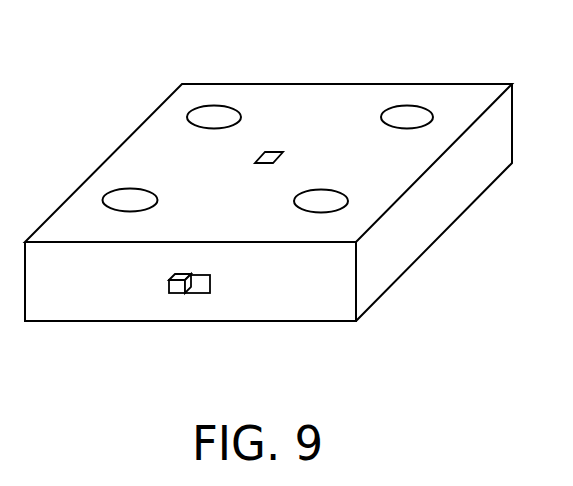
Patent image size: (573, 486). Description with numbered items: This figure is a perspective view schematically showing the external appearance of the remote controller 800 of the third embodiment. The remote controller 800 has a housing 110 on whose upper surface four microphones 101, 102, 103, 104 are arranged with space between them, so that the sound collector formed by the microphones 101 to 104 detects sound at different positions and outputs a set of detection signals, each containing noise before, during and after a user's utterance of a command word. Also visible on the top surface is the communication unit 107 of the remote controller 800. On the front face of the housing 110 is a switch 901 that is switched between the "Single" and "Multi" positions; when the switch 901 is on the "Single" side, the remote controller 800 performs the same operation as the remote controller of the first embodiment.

The microphone 101 is at (211, 105).
The microphone 102 is at (402, 106).
The microphone 103 is at (130, 188).
The microphone 104 is at (320, 190).
The communication unit 107 is at (272, 150).
The housing 110 is at (481, 83).
The remote controller 800 is at (313, 83).
The switch 901 is at (172, 294).